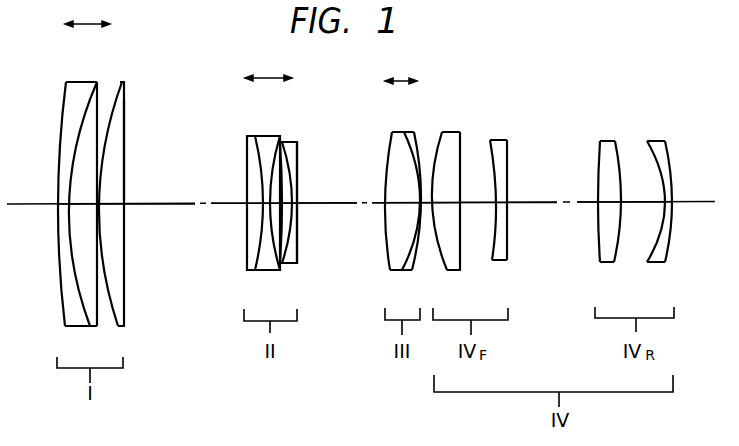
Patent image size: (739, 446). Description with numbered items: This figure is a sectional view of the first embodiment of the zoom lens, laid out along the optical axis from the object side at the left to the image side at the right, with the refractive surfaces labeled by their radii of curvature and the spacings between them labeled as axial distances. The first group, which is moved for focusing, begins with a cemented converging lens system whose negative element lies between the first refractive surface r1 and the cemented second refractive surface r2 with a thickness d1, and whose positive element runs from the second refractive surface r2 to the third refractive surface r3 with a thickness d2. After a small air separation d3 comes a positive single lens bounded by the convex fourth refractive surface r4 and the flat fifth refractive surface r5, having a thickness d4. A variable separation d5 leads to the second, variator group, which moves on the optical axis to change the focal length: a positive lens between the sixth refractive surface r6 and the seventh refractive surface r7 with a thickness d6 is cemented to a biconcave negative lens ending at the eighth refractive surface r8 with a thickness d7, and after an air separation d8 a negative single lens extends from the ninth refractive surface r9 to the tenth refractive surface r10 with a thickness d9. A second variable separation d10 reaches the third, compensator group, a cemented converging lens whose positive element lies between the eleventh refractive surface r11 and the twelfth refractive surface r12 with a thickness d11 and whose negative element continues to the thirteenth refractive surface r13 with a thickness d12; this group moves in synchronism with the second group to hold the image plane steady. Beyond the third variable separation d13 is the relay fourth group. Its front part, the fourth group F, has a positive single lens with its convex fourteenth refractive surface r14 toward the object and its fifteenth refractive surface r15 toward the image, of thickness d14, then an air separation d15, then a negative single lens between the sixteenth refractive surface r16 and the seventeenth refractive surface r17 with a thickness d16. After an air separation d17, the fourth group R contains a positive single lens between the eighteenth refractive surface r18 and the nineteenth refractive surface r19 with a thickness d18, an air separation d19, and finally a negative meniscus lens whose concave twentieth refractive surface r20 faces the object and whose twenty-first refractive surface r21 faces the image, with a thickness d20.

The first refractive surface r1 is at (65, 97).
The second refractive surface r2 is at (82, 88).
The third refractive surface r3 is at (104, 82).
The fourth refractive surface r4 is at (122, 82).
The fifth refractive surface r5 is at (124, 100).
The sixth refractive surface r6 is at (247, 142).
The seventh refractive surface r7 is at (257, 136).
The eighth refractive surface r8 is at (279, 136).
The ninth refractive surface r9 is at (290, 142).
The tenth refractive surface r10 is at (298, 158).
The eleventh refractive surface r11 is at (390, 138).
The twelfth refractive surface r12 is at (403, 132).
The thirteenth refractive surface r13 is at (416, 132).
The fourteenth refractive surface r14 is at (443, 132).
The fifteenth refractive surface r15 is at (462, 140).
The sixteenth refractive surface r16 is at (491, 140).
The seventeenth refractive surface r17 is at (508, 150).
The eighteenth refractive surface r18 is at (600, 144).
The nineteenth refractive surface r19 is at (617, 148).
The twentieth refractive surface r20 is at (647, 143).
The twenty-first refractive surface r21 is at (668, 148).
The first axial distance d1 is at (66, 208).
The second axial distance d2 is at (72, 208).
The third axial distance d3 is at (98, 207).
The fourth axial distance d4 is at (115, 208).
The fifth axial distance d5 is at (180, 205).
The sixth axial distance d6 is at (252, 204).
The seventh axial distance d7 is at (258, 208).
The eighth axial distance d8 is at (285, 204).
The ninth axial distance d9 is at (292, 208).
The tenth axial distance d10 is at (354, 204).
The eleventh axial distance d11 is at (418, 203).
The twelfth axial distance d12 is at (412, 208).
The thirteenth axial distance d13 is at (425, 206).
The fourteenth axial distance d14 is at (447, 203).
The fifteenth axial distance d15 is at (499, 207).
The sixteenth axial distance d16 is at (503, 204).
The seventeenth axial distance d17 is at (557, 204).
The eighteenth axial distance d18 is at (604, 203).
The nineteenth axial distance d19 is at (658, 204).
The twentieth axial distance d20 is at (667, 203).